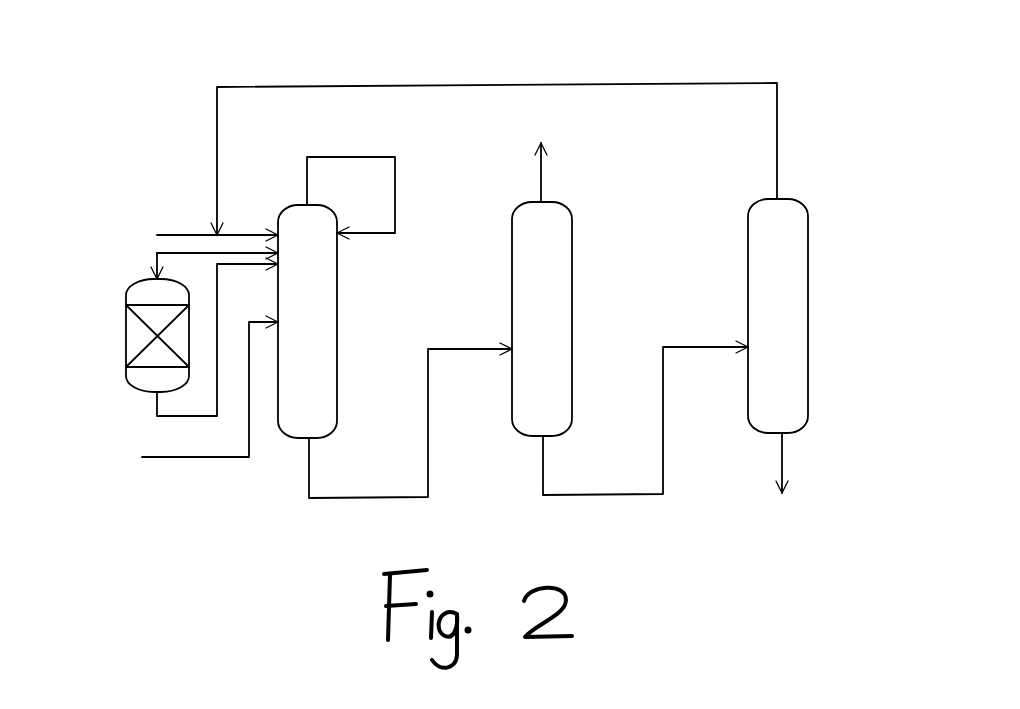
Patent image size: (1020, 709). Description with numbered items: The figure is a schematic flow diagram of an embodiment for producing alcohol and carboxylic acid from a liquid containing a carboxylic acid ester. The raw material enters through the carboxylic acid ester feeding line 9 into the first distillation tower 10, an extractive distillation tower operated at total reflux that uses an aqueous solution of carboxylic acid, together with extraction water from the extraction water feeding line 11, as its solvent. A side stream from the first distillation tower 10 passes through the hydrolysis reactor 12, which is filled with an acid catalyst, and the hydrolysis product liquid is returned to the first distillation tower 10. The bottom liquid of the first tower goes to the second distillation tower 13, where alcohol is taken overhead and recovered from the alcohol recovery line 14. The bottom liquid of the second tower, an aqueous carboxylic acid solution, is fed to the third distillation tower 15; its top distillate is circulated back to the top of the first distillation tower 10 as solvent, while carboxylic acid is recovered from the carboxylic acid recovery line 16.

The carboxylic acid ester feeding line 9 is at (188, 463).
The first distillation tower 10 is at (326, 289).
The extraction water feeding line 11 is at (170, 236).
The hydrolysis reactor 12 is at (133, 343).
The second distillation tower 13 is at (562, 290).
The alcohol recovery line 14 is at (541, 170).
The third distillation tower 15 is at (797, 287).
The carboxylic acid recovery line 16 is at (782, 460).